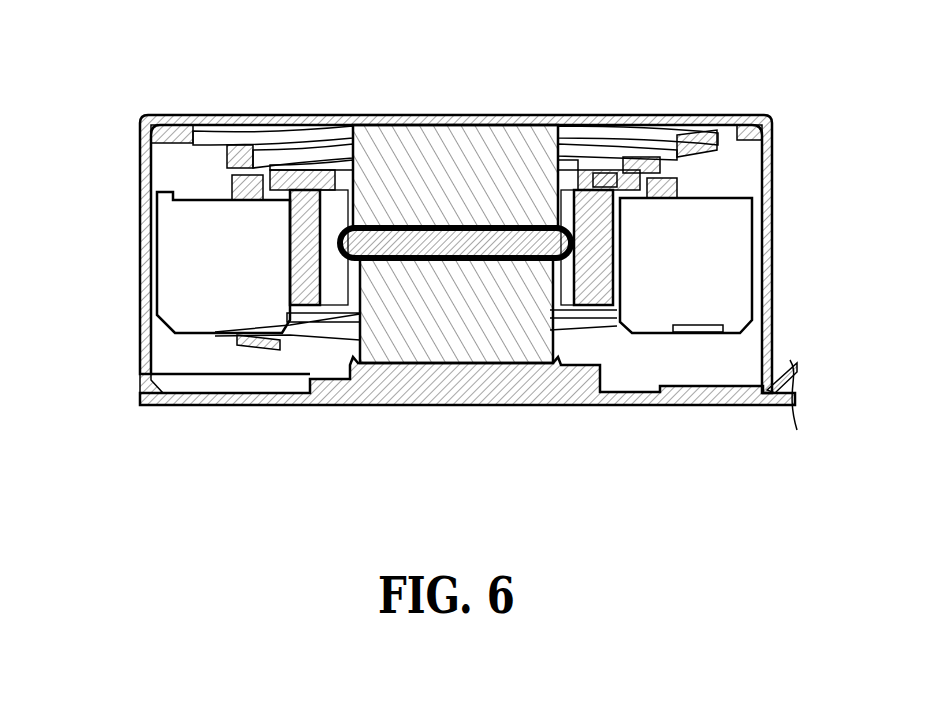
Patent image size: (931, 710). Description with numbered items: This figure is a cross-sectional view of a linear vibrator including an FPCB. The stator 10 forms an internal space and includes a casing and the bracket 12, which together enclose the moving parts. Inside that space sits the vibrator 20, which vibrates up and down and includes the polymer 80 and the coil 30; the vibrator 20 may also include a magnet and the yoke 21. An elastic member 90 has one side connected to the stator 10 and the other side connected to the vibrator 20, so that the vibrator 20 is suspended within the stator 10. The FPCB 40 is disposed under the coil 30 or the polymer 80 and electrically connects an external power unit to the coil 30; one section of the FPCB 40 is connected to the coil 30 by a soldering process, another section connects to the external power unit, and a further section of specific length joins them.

The stator 10 is at (78, 115).
The bracket 12 is at (202, 397).
The vibrator 20 is at (140, 198).
The yoke 21 is at (300, 245).
The coil 30 is at (592, 293).
The FPCB 40 is at (262, 347).
The polymer 80 is at (720, 250).
The elastic member 90 is at (687, 132).